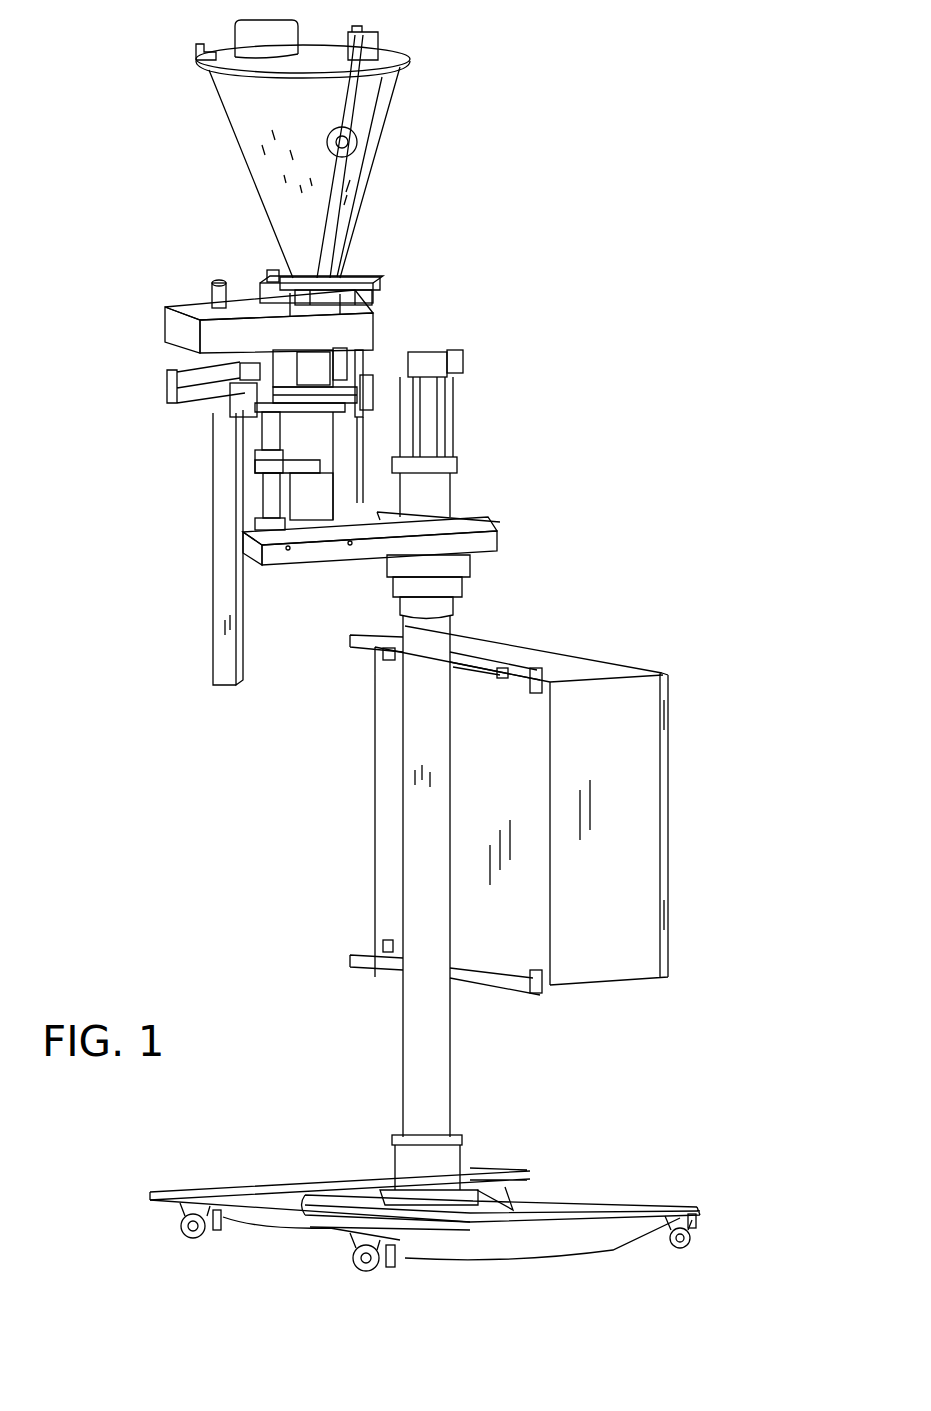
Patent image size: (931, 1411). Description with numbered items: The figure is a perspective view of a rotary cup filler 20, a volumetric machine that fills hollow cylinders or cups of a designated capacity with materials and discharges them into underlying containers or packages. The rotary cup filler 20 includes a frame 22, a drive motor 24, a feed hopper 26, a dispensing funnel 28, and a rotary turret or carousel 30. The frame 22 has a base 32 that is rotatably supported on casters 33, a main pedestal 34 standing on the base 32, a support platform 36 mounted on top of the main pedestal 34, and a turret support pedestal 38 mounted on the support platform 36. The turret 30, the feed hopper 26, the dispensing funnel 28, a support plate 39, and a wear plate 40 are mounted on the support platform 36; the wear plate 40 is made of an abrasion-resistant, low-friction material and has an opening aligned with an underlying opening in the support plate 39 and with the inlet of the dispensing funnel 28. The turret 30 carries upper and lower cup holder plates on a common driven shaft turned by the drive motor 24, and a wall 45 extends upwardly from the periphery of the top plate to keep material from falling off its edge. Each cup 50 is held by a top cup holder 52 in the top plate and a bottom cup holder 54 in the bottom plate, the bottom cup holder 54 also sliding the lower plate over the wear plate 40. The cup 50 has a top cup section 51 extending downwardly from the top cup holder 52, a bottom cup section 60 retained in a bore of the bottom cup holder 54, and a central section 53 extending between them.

The rotary cup filler 20 is at (560, 153).
The frame 22 is at (512, 1152).
The drive motor 24 is at (440, 407).
The feed hopper 26 is at (371, 137).
The dispensing funnel 28 is at (217, 433).
The rotary turret 30 is at (140, 323).
The base 32 is at (513, 1208).
The casters 33 is at (195, 1240).
The main pedestal 34 is at (440, 1053).
The support platform 36 is at (318, 548).
The turret support pedestal 38 is at (348, 358).
The support plate 39 is at (255, 427).
The wear plate 40 is at (310, 413).
The wall 45 is at (220, 333).
The cup 50 is at (247, 360).
The top cup section 51 is at (262, 357).
The top cup holder 52 is at (323, 347).
The central section 53 is at (257, 392).
The bottom cup holder 54 is at (343, 383).
The bottom cup section 60 is at (257, 413).